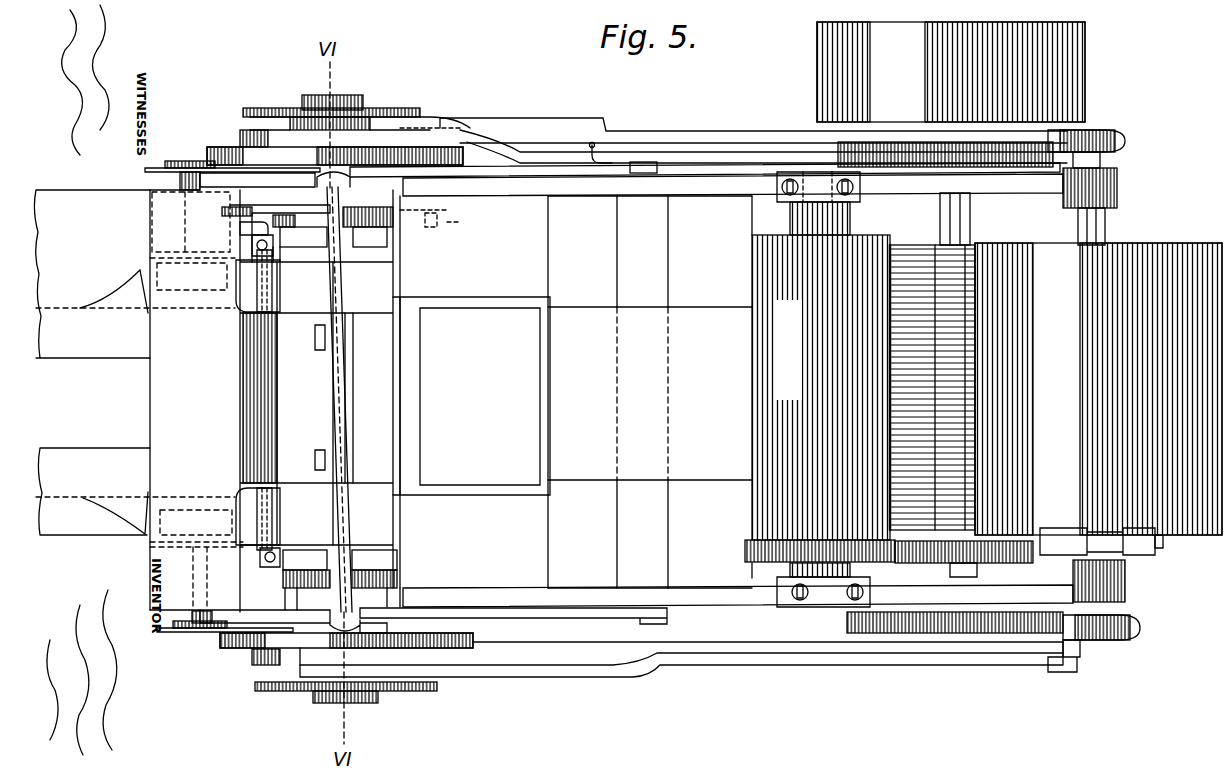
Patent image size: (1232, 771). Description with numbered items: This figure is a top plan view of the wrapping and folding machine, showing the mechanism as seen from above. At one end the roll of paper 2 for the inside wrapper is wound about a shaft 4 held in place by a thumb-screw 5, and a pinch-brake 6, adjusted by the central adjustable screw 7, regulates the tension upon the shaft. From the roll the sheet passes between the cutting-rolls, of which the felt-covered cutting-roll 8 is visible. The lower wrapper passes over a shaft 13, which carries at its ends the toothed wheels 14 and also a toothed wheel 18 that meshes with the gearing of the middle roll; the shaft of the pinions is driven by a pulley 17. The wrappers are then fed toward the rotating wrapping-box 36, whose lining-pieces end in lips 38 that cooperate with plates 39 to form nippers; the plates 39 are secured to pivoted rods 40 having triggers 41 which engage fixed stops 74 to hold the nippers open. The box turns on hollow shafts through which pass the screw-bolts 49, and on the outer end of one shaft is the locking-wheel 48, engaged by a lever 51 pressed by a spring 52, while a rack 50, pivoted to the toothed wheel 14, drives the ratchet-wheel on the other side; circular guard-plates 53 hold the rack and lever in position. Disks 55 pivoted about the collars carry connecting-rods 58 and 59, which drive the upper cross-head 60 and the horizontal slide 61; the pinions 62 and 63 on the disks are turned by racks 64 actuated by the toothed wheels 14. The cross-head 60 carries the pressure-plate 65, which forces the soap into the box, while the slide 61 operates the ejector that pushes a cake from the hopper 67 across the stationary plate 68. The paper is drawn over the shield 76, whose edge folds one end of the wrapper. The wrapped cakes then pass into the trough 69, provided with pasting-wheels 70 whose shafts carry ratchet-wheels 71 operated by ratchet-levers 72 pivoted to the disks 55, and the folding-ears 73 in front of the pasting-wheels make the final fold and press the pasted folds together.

The roll of paper 2 is at (1098, 389).
The shaft 4 is at (1108, 232).
The thumb-screw 5 is at (1126, 140).
The pinch-brake 6 is at (1132, 545).
The adjustable bolt or screw 7 is at (1163, 544).
The cutting-roll 8 is at (820, 398).
The shaft 13 is at (968, 238).
The toothed wheel 14 is at (848, 624).
The pulley 17 is at (951, 72).
The toothed wheel 18 is at (1034, 550).
The wrapping-box 36 is at (390, 243).
The lip 38 is at (240, 308).
The plate 39 is at (258, 284).
The rod 40 is at (252, 258).
The trigger 41 is at (245, 237).
The locking-wheel 48 is at (315, 122).
The screw-bolt 49 is at (340, 96).
The rack 50 is at (482, 678).
The lever 51 is at (430, 118).
The spring 52 is at (680, 160).
The circular guard-plate 53 is at (258, 108).
The disk 55 is at (207, 156).
The connecting-rod 58 is at (293, 401).
The connecting-rod 59 is at (472, 180).
The upper cross-head 60 is at (347, 496).
The horizontal slide 61 is at (650, 534).
The pinion 62 is at (255, 660).
The pinion 63 is at (240, 138).
The rack 64 is at (683, 392).
The pressure-plate 65 is at (315, 403).
The hopper 67 is at (471, 396).
The stationary plate 68 is at (650, 251).
The trough 69 is at (92, 400).
The pasting-wheel 70 is at (196, 401).
The ratchet-wheel 71 is at (175, 162).
The ratchet-lever 72 is at (150, 170).
The folding-ear 73 is at (128, 296).
The fixed stop 74 is at (233, 214).
The shield 76 is at (255, 420).